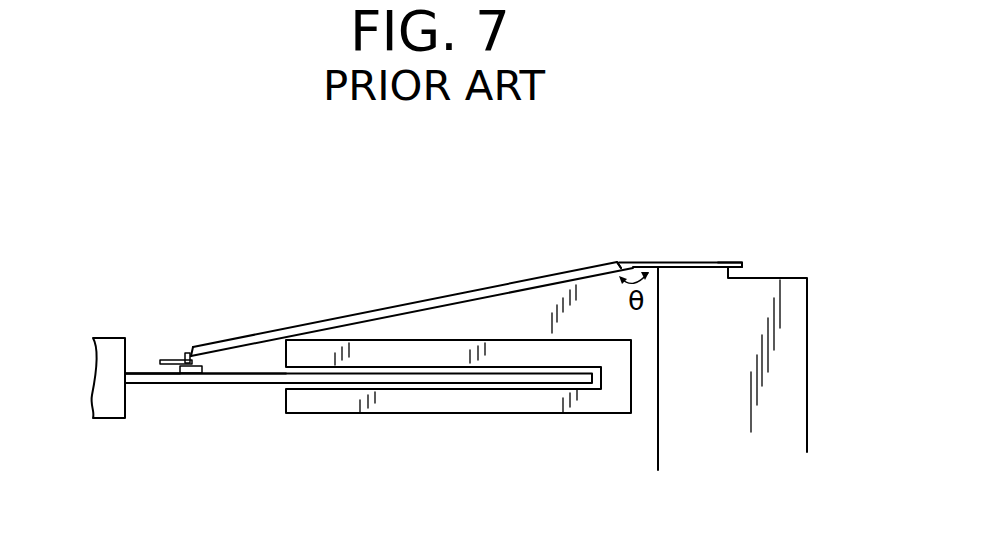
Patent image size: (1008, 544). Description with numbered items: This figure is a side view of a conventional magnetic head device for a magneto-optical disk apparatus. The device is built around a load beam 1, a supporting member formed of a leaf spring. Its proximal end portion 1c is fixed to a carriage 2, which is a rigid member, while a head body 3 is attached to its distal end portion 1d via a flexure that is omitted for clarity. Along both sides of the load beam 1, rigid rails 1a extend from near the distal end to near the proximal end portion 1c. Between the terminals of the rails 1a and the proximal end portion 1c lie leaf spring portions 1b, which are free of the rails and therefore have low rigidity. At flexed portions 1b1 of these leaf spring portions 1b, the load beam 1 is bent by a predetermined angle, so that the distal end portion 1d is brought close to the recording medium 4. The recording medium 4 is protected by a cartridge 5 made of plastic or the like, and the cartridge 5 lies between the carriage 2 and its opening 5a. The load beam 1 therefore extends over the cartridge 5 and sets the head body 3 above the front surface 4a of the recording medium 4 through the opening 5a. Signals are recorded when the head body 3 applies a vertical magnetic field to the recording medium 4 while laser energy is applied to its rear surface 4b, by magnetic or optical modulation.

The load beam 1 is at (532, 266).
The rail 1a is at (468, 291).
The leaf spring portion 1b is at (660, 259).
The flexed portion 1b1 is at (634, 261).
The proximal end portion 1c is at (728, 262).
The distal end portion 1d is at (173, 353).
The carriage 2 is at (788, 368).
The head body 3 is at (185, 373).
The recording medium 4 is at (392, 376).
The front surface 4a is at (152, 350).
The rear surface 4b is at (262, 405).
The cartridge 5 is at (533, 398).
The opening 5a is at (131, 355).